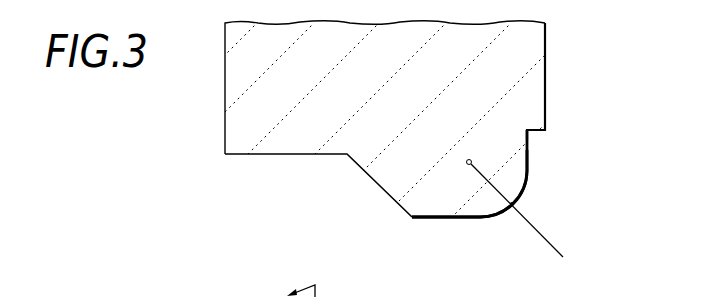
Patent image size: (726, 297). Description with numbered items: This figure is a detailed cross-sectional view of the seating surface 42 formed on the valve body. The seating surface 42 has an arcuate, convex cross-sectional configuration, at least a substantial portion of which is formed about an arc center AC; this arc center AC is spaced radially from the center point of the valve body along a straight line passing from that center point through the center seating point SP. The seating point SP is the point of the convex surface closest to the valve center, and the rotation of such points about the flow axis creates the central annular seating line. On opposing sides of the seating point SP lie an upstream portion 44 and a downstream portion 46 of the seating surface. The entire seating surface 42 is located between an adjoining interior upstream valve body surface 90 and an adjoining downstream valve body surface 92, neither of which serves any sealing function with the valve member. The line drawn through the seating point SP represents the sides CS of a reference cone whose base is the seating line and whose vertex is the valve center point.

The seating surface 42 is at (538, 166).
The upstream portion of the seating surface 44 is at (484, 219).
The downstream portion of the seating surface 46 is at (527, 189).
The upstream valve body surface 90 is at (414, 220).
The downstream valve body surface 92 is at (531, 137).
The arc center AC is at (470, 160).
The center seating point SP is at (512, 205).
The sides of the reference cone CS is at (565, 256).